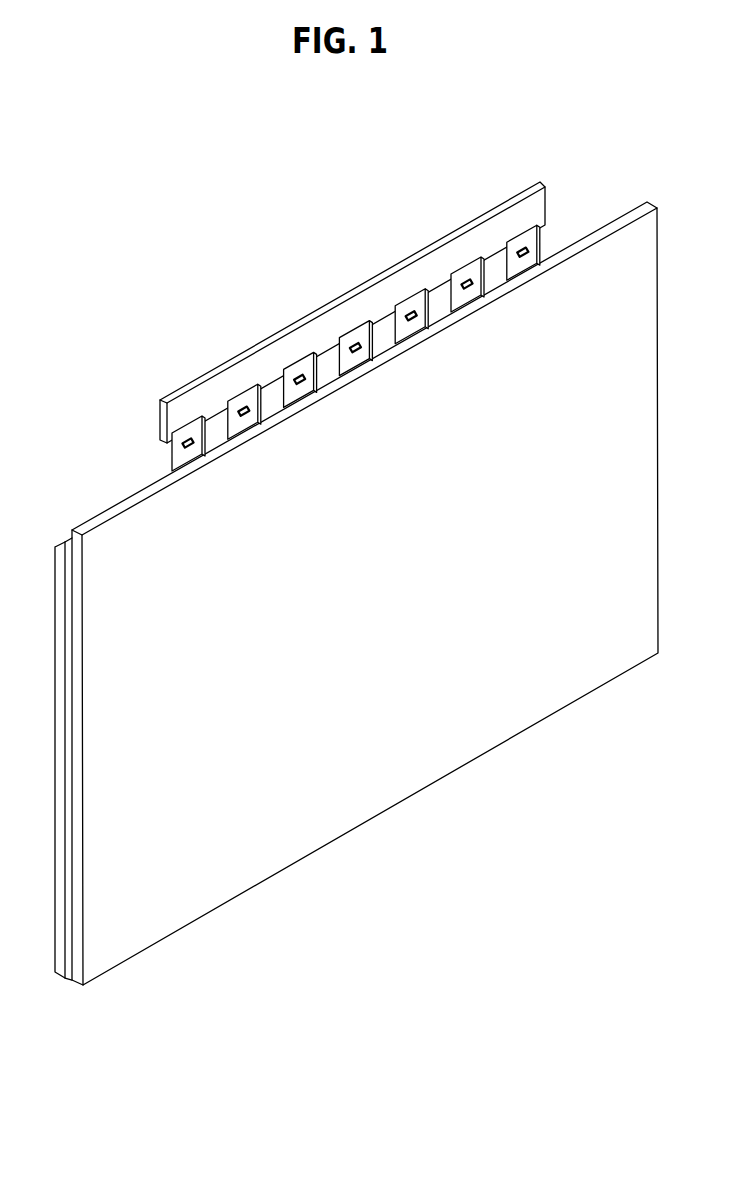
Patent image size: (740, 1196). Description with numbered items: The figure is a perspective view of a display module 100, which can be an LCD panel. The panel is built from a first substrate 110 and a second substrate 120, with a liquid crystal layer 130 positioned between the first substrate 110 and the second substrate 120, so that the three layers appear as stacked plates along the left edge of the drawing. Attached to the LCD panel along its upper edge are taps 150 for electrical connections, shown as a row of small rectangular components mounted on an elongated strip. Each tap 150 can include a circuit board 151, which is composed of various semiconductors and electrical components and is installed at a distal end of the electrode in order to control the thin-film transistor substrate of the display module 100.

The display module 100 is at (110, 288).
The first substrate 110 is at (117, 537).
The second substrate 120 is at (57, 565).
The liquid crystal layer 130 is at (70, 932).
The tap 150 is at (420, 305).
The circuit board 151 is at (247, 373).